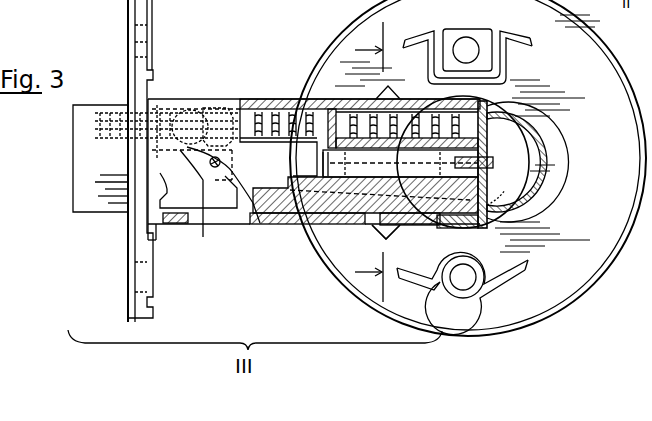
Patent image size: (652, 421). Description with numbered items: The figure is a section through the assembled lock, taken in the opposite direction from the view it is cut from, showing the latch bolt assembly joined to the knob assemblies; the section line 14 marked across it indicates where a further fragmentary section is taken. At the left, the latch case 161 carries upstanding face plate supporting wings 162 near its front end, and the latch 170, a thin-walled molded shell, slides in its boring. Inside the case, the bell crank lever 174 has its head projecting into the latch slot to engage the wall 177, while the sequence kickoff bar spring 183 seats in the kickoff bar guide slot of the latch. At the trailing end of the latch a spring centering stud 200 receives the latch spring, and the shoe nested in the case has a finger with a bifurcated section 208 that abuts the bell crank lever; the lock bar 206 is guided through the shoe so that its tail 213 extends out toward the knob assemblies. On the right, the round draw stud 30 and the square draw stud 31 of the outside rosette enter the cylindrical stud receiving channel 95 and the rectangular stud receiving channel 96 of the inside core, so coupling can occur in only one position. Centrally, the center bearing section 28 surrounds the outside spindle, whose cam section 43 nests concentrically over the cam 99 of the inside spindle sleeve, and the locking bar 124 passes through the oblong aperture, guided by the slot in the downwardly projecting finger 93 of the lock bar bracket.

The face plate supporting wings 162 is at (143, 62).
The latch 170 is at (80, 205).
The sequence kickoff bar spring 183 is at (180, 105).
The wall 177 is at (216, 95).
The latch case 161 is at (230, 95).
The bell crank lever 174 is at (203, 225).
The spring centering stud 200 is at (278, 96).
The lock bar 206 is at (300, 160).
The tail 213 is at (402, 162).
The bifurcated section 208 is at (254, 224).
The center bearing section 28 is at (518, 138).
The cam section 43 is at (518, 176).
The locking bar 124 is at (495, 162).
The cam 99 is at (505, 192).
The stud receiving channel 96 is at (502, 72).
The draw stud 31 is at (478, 33).
The stud receiving channel 95 is at (505, 268).
The draw stud 30 is at (477, 292).
The section line 14- 14 is at (369, 162).
The finger 93 is at (384, 232).